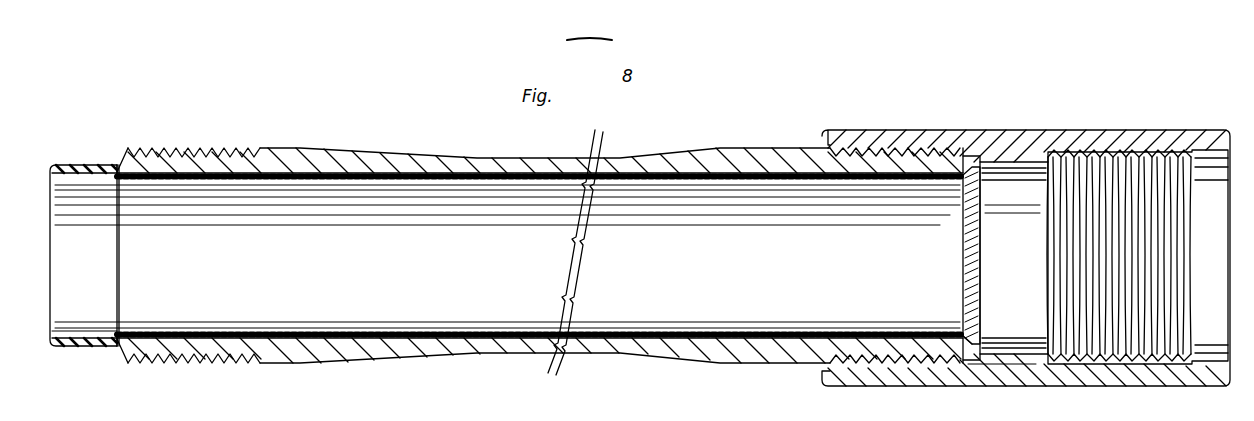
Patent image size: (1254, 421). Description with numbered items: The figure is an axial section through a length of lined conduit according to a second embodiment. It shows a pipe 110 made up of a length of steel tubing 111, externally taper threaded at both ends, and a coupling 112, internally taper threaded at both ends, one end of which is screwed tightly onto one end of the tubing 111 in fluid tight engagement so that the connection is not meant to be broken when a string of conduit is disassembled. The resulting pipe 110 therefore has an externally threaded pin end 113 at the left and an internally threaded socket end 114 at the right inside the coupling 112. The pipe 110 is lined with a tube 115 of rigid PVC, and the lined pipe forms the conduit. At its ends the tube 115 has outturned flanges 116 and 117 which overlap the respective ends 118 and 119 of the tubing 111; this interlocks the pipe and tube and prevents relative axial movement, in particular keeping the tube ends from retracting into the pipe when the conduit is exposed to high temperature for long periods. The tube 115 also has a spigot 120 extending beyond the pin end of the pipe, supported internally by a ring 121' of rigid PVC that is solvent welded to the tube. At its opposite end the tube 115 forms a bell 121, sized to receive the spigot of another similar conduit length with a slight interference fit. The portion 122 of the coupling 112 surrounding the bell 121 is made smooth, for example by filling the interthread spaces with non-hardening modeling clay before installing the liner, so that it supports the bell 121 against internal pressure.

The pipe 110 is at (838, 132).
The tubing 111 is at (613, 158).
The coupling 112 is at (998, 140).
The pin end 113 is at (198, 148).
The socket end 114 is at (1130, 358).
The tube 115 is at (462, 332).
The outturned flange 116 is at (116, 152).
The outturned flange 117 is at (958, 160).
The end of tubing 118 is at (129, 350).
The end of tubing 119 is at (962, 345).
The spigot 120 is at (80, 163).
The bell 121 is at (1014, 258).
The ring 121' is at (84, 305).
The portion of coupling 122 is at (1036, 360).